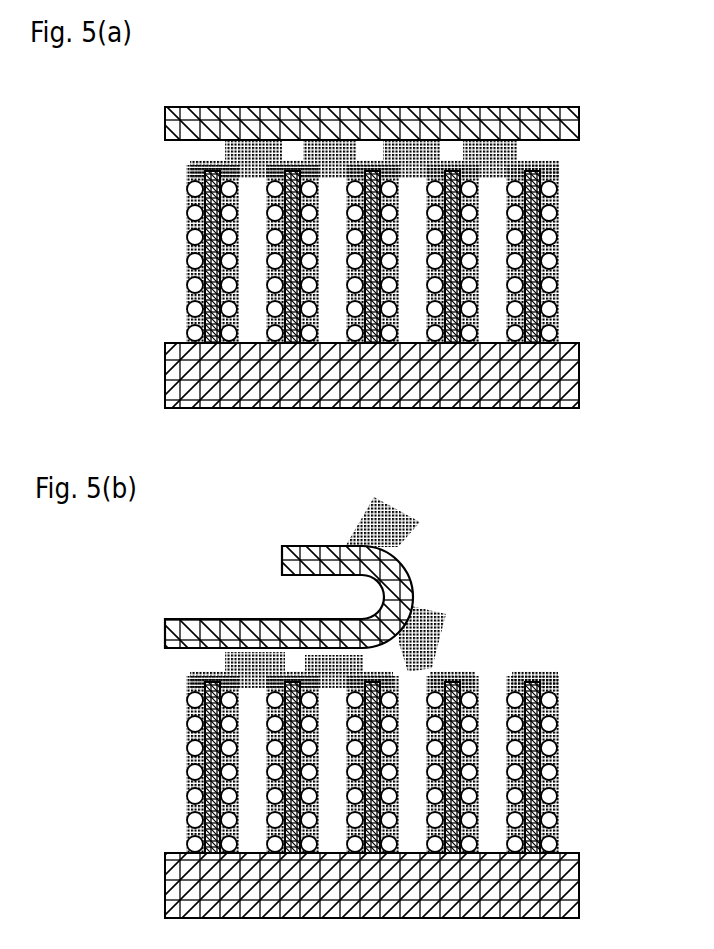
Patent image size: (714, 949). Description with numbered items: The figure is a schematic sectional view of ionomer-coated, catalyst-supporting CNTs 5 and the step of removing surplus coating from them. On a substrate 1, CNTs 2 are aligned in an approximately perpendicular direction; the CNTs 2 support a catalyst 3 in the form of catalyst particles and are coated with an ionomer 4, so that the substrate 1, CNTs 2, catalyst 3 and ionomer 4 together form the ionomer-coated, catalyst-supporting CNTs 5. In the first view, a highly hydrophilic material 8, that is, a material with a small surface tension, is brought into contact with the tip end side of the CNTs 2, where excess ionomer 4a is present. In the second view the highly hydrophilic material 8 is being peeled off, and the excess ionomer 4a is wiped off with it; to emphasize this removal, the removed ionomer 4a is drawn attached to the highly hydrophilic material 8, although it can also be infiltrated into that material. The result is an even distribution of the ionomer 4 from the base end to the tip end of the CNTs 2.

In FIG. 5A, the substrate 1 is at (573, 375).
In FIG. 5B, the substrate 1 is at (573, 885).
In FIG. 5A, the CNTs 2 is at (653, 200).
In FIG. 5B, the CNTs 2 is at (653, 712).
In FIG. 5A, the catalyst 3 is at (548, 208).
In FIG. 5B, the catalyst 3 is at (550, 720).
In FIG. 5A, the ionomer 4 is at (548, 270).
In FIG. 5B, the ionomer 4 is at (552, 777).
In FIG. 5A, the excess ionomer 4a is at (515, 155).
In FIG. 5B, the excess ionomer 4a is at (403, 532).
In FIG. 5A, the ionomer-coated, catalyst-supporting CNTs 5 is at (439, 254).
In FIG. 5B, the ionomer-coated, catalyst-supporting CNTs 5 is at (439, 765).
In FIG. 5A, the highly hydrophilic material 8 is at (557, 122).
In FIG. 5B, the highly hydrophilic material 8 is at (407, 575).